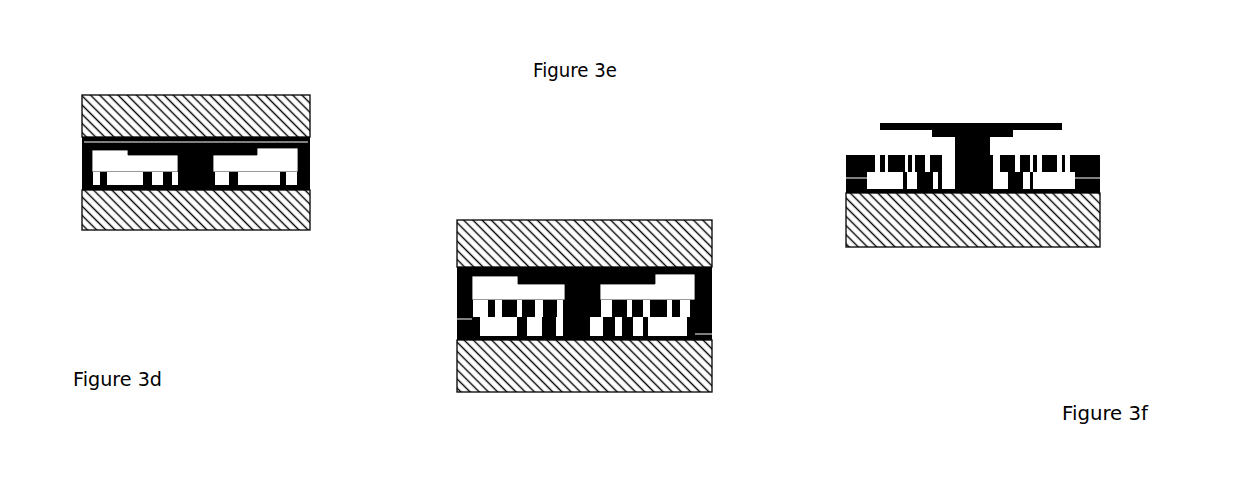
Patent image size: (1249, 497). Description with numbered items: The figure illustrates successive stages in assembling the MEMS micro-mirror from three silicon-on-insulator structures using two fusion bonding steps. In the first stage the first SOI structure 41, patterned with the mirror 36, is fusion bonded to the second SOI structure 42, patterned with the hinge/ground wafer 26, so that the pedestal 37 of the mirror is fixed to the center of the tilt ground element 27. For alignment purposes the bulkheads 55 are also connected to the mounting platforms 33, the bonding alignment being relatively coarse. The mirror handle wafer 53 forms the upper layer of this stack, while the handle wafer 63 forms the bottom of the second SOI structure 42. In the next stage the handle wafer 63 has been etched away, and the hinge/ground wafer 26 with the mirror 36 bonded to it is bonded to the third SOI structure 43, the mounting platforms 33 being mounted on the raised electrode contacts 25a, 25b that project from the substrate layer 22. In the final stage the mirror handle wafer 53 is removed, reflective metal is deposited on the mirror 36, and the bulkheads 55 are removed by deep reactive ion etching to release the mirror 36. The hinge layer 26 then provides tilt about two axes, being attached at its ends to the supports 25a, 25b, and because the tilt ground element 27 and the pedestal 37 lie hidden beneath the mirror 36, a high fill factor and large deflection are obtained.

In FIG. 3E, the substrate layer 22 is at (695, 383).
In FIG. 3F, the substrate layer 22 is at (1067, 240).
In FIG. 3E, the raised electrode contact 25a is at (460, 332).
In FIG. 3F, the raised electrode contact 25a is at (846, 182).
In FIG. 3E, the raised electrode contact 25b is at (712, 330).
In FIG. 3F, the raised electrode contact 25b is at (1093, 183).
In FIG. 3D, the hinge/ground wafer 26 is at (80, 172).
In FIG. 3E, the hinge/ground wafer 26 is at (446, 314).
In FIG. 3F, the hinge/ground wafer 26 is at (1110, 160).
In FIG. 3D, the tilt ground element 27 is at (175, 187).
In FIG. 3D, the mounting platform 33 is at (310, 173).
In FIG. 3E, the mounting platform 33 is at (457, 307).
In FIG. 3F, the mounting platform 33 is at (846, 160).
In FIG. 3D, the mirror 36 is at (240, 168).
In FIG. 3F, the mirror 36 is at (970, 125).
In FIG. 3D, the pedestal 37 is at (207, 163).
In FIG. 3D, the first SOI structure 41 is at (70, 117).
In FIG. 3D, the second SOI structure 42 is at (214, 238).
In FIG. 3E, the third SOI structure 43 is at (722, 383).
In FIG. 3D, the mirror handle wafer 53 is at (180, 105).
In FIG. 3E, the mirror handle wafer 53 is at (473, 230).
In FIG. 3D, the bulkhead 55 is at (308, 160).
In FIG. 3E, the bulkhead 55 is at (463, 287).
In FIG. 3D, the handle wafer 63 is at (103, 220).